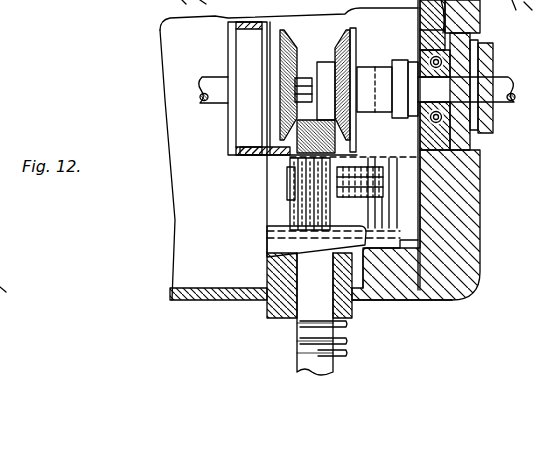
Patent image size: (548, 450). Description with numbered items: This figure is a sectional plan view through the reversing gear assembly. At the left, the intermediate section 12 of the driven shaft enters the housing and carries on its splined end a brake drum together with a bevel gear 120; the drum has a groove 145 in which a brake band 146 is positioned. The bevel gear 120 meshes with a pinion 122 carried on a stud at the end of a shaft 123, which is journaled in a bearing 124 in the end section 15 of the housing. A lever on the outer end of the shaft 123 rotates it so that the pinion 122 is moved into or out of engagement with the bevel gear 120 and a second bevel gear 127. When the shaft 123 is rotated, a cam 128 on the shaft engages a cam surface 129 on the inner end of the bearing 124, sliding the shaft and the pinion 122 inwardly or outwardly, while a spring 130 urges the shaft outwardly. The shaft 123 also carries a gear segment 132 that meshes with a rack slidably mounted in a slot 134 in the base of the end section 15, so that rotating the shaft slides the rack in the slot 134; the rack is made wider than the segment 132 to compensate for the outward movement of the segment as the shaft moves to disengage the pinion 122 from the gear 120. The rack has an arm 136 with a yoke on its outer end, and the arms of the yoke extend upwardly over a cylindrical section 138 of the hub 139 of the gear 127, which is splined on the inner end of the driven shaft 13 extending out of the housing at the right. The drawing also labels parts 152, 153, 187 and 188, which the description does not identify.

The intermediate section of the driven shaft 12 is at (205, 80).
The driven shaft 13 is at (500, 74).
The end section of the housing 15 is at (466, 306).
The bevel gear 120 is at (290, 45).
The pinion 122 is at (287, 162).
The shaft 123 is at (300, 207).
The bearing 124 is at (278, 271).
The bevel gear 127 is at (372, 3).
The cam 128 is at (270, 236).
The cam surface 129 is at (400, 240).
The spring 130 is at (345, 341).
The gear segment 132 is at (279, 302).
The slot 134 is at (407, 250).
The arm 136 is at (400, 167).
The cylindrical section 138 is at (363, 302).
The hub 139 is at (390, 118).
The groove 145 is at (246, 139).
The brake band 146 is at (226, 20).
The spring 152 is at (385, 185).
The spring guide 153 is at (395, 212).
The hub 187 is at (403, 58).
The sleeve 188 is at (370, 66).